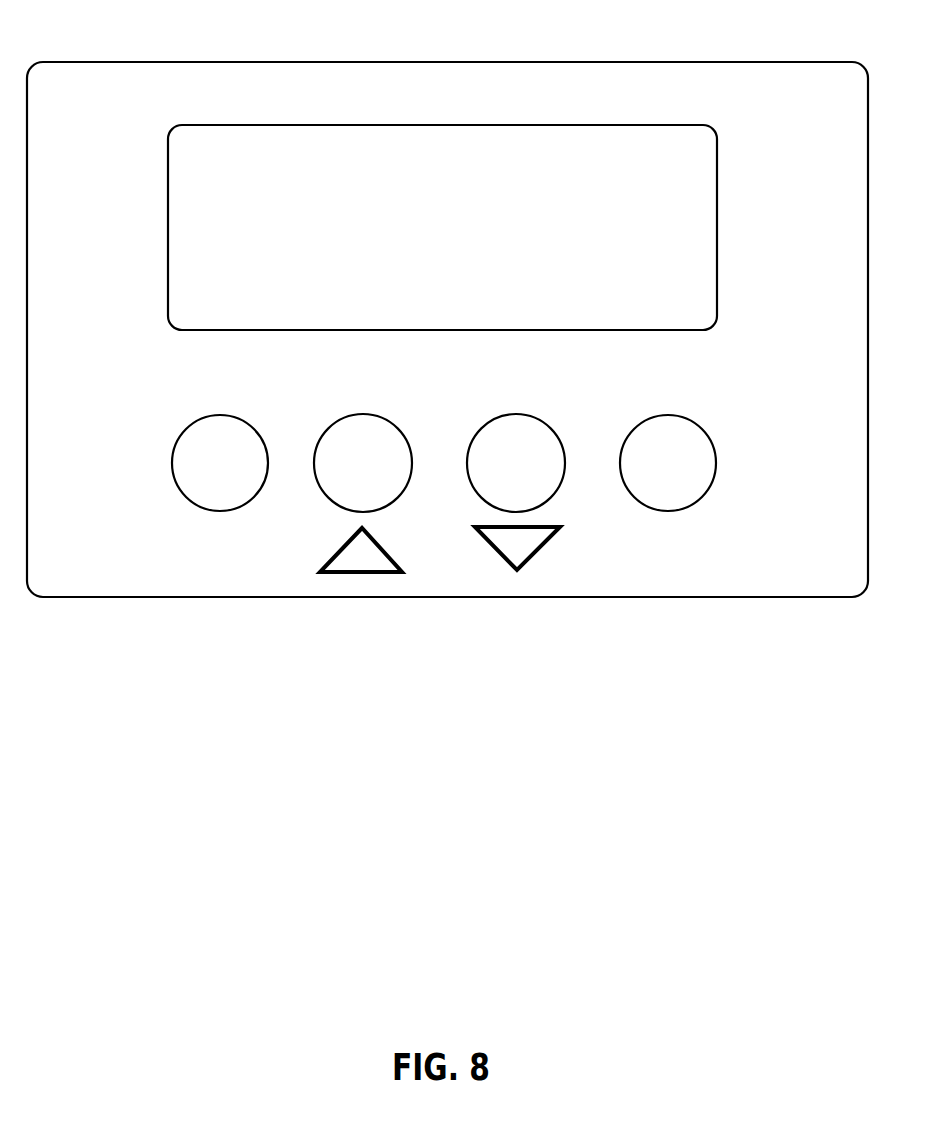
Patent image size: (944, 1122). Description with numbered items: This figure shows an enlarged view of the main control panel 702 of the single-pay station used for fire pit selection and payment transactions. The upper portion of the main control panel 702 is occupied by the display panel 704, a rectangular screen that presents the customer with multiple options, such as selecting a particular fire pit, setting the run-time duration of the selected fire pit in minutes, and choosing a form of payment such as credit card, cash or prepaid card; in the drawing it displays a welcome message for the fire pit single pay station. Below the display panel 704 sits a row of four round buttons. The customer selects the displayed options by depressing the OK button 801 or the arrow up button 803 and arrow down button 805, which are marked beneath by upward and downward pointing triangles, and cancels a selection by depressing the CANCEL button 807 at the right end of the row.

The main control panel 702 is at (331, 44).
The display panel 704 is at (193, 148).
The OK button 801 is at (212, 443).
The ARROW UP button 803 is at (362, 438).
The ARROW DOWN button 805 is at (512, 437).
The CANCEL button 807 is at (665, 437).